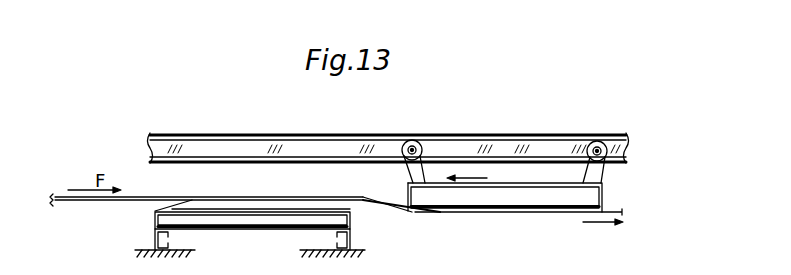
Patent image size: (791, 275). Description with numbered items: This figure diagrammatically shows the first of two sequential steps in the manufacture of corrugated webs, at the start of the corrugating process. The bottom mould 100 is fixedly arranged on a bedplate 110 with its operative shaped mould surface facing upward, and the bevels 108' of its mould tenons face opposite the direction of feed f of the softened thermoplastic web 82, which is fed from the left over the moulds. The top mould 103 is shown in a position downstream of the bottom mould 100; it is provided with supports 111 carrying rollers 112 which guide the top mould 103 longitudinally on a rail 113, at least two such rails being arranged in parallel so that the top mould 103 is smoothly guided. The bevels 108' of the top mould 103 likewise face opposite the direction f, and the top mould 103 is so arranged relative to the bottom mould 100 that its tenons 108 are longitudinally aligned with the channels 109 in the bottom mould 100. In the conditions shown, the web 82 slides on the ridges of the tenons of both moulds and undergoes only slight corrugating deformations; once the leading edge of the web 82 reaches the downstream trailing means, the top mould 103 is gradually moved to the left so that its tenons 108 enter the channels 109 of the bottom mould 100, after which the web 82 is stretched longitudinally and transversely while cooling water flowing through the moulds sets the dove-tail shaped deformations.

The softened thermoplastic web 82 is at (64, 197).
The bottom mould 100 is at (259, 229).
The top mould 103 is at (505, 190).
The tenons 108 is at (531, 199).
The bevels 108' is at (410, 227).
The channels 109 is at (343, 207).
The bedplate 110 is at (146, 250).
The supports 111 is at (410, 173).
The rollers 112 is at (417, 150).
The rail 113 is at (334, 140).